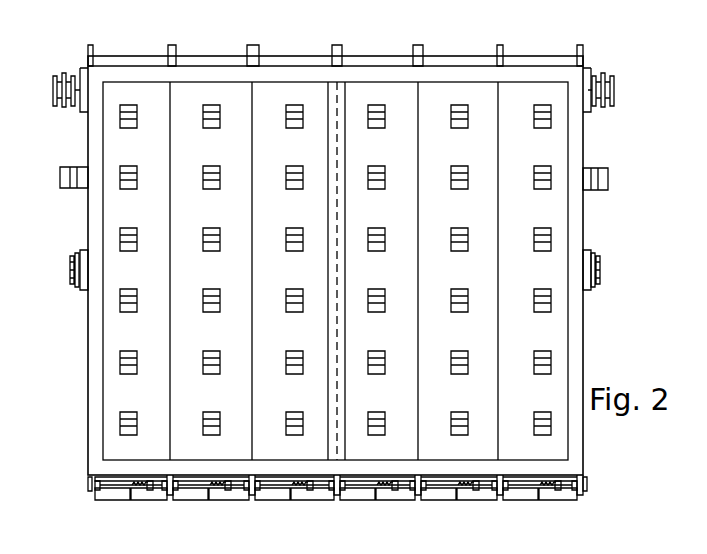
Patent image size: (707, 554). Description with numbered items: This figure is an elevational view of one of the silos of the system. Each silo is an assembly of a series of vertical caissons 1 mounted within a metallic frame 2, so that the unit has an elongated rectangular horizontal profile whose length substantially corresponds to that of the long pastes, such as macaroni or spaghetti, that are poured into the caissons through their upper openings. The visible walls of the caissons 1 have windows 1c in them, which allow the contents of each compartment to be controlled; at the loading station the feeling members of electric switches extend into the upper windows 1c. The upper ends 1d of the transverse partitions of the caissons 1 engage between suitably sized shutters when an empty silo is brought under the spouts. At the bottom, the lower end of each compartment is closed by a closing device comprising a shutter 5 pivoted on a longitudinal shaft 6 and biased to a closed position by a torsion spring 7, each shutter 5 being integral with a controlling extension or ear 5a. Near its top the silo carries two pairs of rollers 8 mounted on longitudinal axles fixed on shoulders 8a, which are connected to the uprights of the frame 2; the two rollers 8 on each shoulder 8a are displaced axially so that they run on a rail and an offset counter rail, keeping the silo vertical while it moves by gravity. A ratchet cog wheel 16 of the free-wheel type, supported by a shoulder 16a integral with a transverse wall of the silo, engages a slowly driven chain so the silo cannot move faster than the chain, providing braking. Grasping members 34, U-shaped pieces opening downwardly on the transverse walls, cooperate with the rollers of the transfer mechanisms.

The vertical caisson 1 is at (269, 108).
The window 1c is at (118, 363).
The upper end of transverse partition 1d is at (418, 46).
The metallic frame 2 is at (306, 76).
The shutter 5 is at (588, 0).
The controlling extension or ear 5a is at (184, 495).
The longitudinal shaft 6 is at (358, 487).
The torsion spring 7 is at (306, 486).
The roller 8 is at (62, 79).
The shoulder 8a is at (84, 77).
The ratchet cog wheel 16 is at (70, 267).
The shoulder 16a is at (84, 285).
The grasping member 34 is at (69, 175).